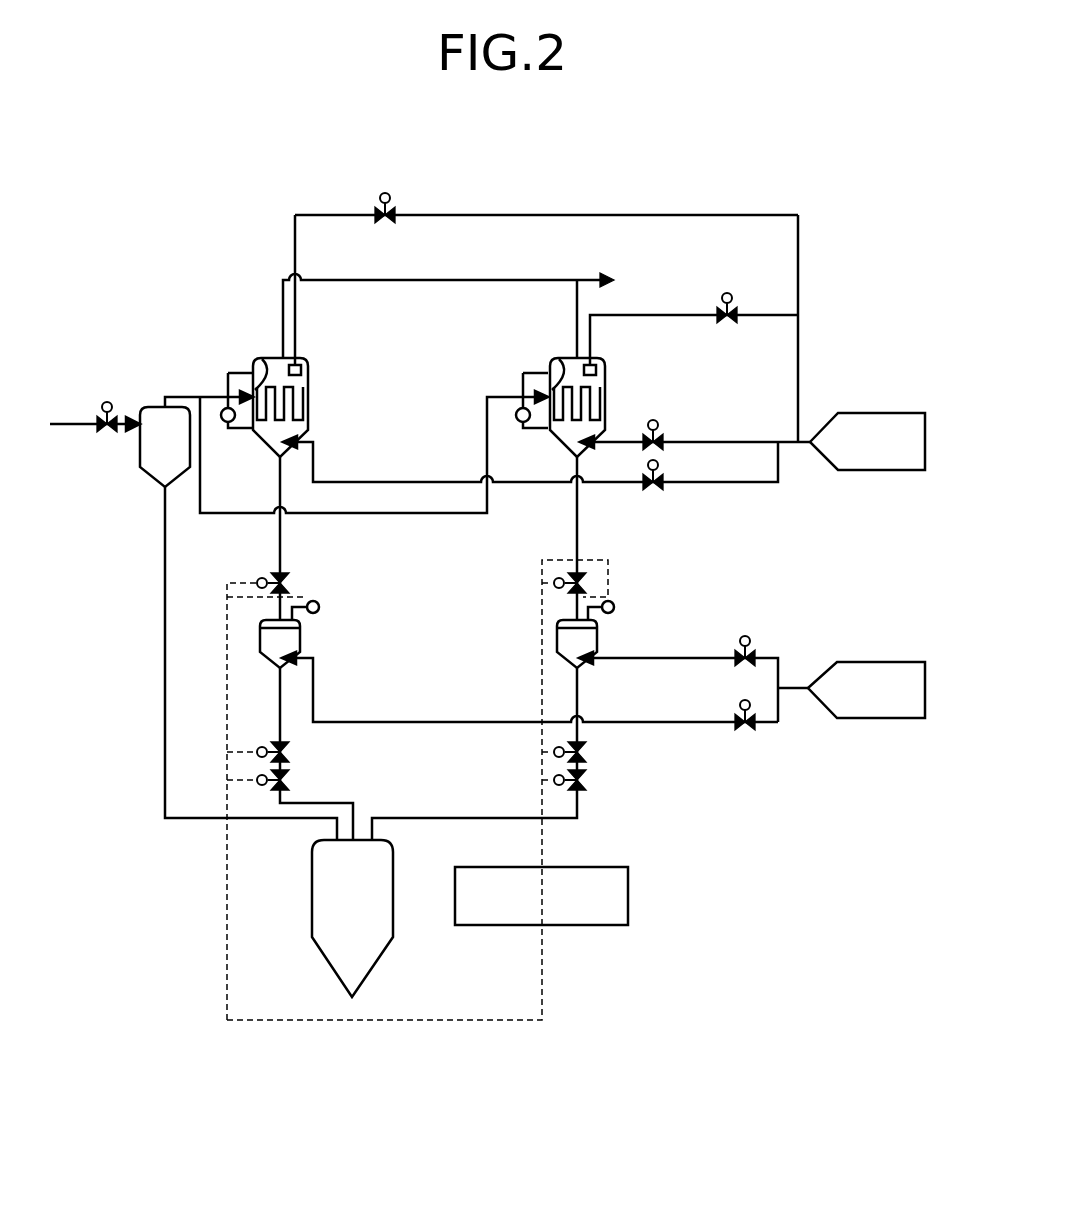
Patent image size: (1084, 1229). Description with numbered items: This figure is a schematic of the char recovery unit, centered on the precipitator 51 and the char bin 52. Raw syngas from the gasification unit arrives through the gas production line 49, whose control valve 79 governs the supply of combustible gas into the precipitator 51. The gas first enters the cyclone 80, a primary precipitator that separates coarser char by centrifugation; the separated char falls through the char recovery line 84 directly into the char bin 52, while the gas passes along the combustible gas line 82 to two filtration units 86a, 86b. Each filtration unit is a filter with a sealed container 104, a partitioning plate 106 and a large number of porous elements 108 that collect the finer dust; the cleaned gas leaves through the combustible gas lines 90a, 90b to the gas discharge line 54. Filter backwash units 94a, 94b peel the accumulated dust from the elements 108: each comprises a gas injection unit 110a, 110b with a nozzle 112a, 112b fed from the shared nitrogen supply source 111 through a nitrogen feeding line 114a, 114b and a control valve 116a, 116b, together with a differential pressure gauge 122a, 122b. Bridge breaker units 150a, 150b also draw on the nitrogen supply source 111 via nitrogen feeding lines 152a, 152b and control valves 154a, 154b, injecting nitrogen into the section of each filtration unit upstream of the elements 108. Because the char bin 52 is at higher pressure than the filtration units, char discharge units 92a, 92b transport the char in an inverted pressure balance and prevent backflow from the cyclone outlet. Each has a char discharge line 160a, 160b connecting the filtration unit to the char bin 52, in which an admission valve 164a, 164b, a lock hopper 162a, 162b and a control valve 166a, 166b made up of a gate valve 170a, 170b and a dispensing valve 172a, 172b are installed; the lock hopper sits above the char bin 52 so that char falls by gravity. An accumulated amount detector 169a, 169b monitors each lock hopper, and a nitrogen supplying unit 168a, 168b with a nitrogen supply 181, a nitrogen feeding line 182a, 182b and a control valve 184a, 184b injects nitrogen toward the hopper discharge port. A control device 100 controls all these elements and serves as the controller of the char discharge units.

The precipitator 51 is at (222, 202).
The gas injection unit 110a is at (325, 205).
The gas injection unit 110b is at (815, 338).
The control valve 116a is at (398, 198).
The control valve 116b is at (715, 292).
The nitrogen feeding line 114a is at (608, 218).
The nitrogen feeding line 114b is at (765, 310).
The filter backwash unit 94a is at (278, 241).
The filter backwash unit 94b is at (888, 296).
The combustible gas line 90a is at (344, 280).
The combustible gas line 90b is at (572, 288).
The gas discharge line 54 is at (584, 278).
The container 104 is at (248, 360).
The partitioning plate 106 is at (262, 362).
The elements 108 is at (306, 415).
The filtration unit 86a is at (312, 352).
The filtration unit 86b is at (605, 356).
The nozzle 112a is at (303, 372).
The nozzle 112b is at (598, 370).
The bridge breaker unit 150a is at (428, 430).
The bridge breaker unit 150b is at (792, 525).
The control valve 79 is at (106, 400).
The combustible gas line 82 is at (180, 395).
The gas production line 49 is at (64, 415).
The cyclone 80 is at (138, 455).
The nitrogen supply source 111 is at (862, 413).
The nitrogen feeding line 152a is at (352, 482).
The nitrogen feeding line 152b is at (668, 442).
The differential pressure gauge 122a is at (228, 424).
The differential pressure gauge 122b is at (522, 424).
The control valve 154a is at (668, 488).
The control valve 154b is at (648, 445).
The char discharge line 160a is at (285, 523).
The char discharge line 160b is at (572, 496).
The char discharge unit 92a is at (262, 612).
The char discharge unit 92b is at (552, 605).
The admission valve 164a is at (300, 588).
The admission valve 164b is at (594, 582).
The nitrogen supplying unit 168a is at (490, 672).
The nitrogen supplying unit 168b is at (805, 580).
The accumulated amount detector 169a is at (318, 614).
The accumulated amount detector 169b is at (615, 607).
The lock hopper 162a is at (302, 655).
The lock hopper 162b is at (600, 650).
The control valve 184a is at (758, 728).
The control valve 184b is at (765, 640).
The nitrogen supply 181 is at (870, 660).
The nitrogen feeding line 182a is at (406, 722).
The nitrogen feeding line 182b is at (600, 662).
The char recovery line 84 is at (163, 698).
The gate valve 170a is at (292, 748).
The gate valve 170b is at (590, 752).
The dispensing valve 172a is at (292, 780).
The dispensing valve 172b is at (590, 784).
The control valve 166a is at (438, 801).
The control valve 166b is at (730, 750).
The char bin 52 is at (310, 892).
The control device 100 is at (630, 895).